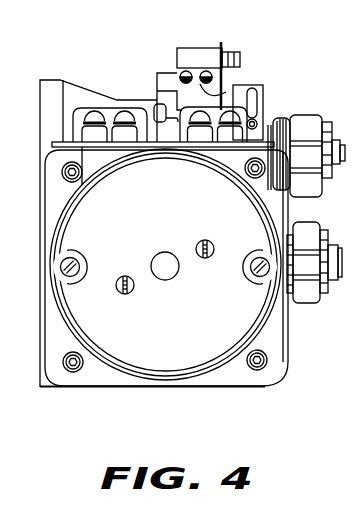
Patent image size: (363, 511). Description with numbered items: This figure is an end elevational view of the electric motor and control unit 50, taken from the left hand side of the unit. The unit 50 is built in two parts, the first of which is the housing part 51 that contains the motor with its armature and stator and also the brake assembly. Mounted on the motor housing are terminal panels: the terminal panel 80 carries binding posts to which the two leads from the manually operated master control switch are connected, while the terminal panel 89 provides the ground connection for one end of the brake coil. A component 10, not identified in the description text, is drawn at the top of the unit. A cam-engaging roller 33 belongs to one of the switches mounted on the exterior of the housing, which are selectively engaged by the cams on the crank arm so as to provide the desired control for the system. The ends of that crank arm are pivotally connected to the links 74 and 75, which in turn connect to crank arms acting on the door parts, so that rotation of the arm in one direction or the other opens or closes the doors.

The switch unit 10 is at (199, 56).
The cam-engaging roller 33 is at (241, 63).
The electric motor and control unit 50 is at (284, 356).
The motor housing part 51 is at (160, 389).
The link 74 is at (306, 130).
The link 75 is at (312, 296).
The terminal panel 80 is at (108, 138).
The terminal panel 89 is at (216, 133).